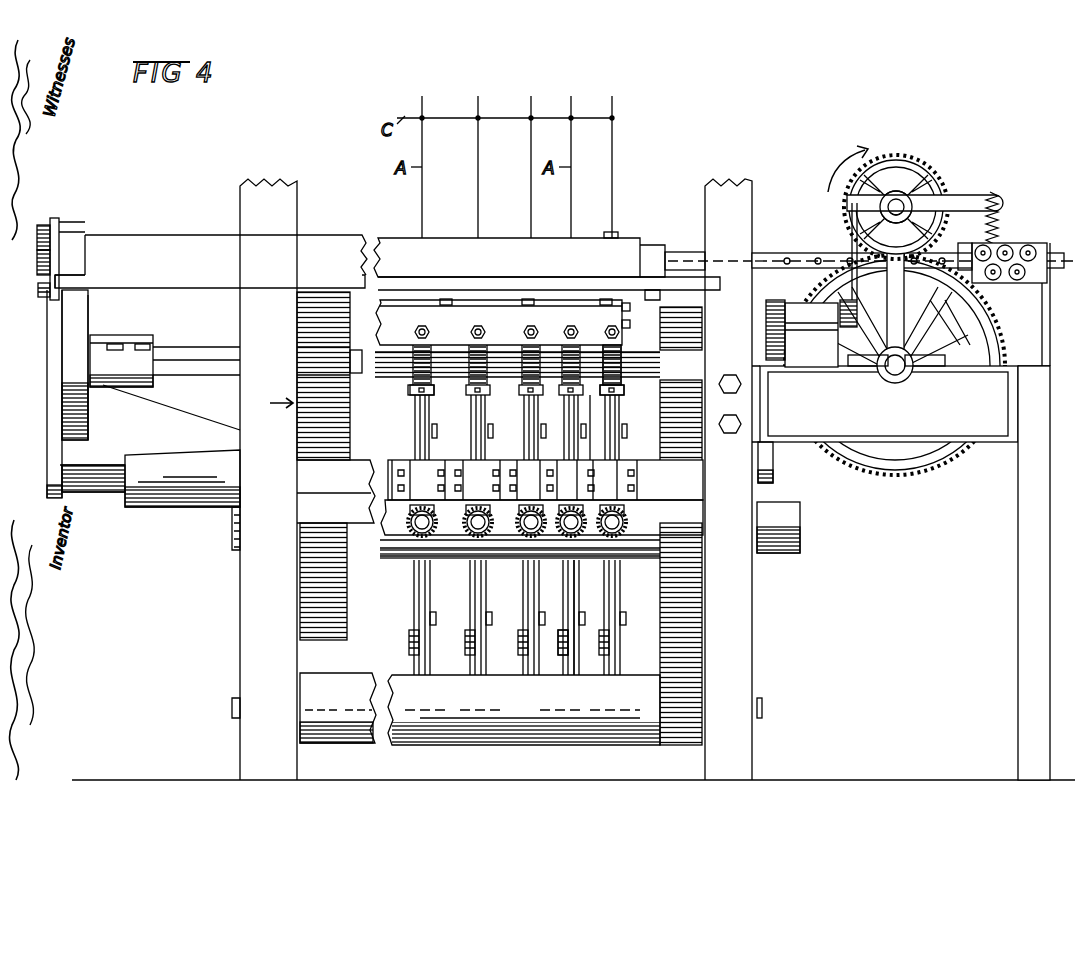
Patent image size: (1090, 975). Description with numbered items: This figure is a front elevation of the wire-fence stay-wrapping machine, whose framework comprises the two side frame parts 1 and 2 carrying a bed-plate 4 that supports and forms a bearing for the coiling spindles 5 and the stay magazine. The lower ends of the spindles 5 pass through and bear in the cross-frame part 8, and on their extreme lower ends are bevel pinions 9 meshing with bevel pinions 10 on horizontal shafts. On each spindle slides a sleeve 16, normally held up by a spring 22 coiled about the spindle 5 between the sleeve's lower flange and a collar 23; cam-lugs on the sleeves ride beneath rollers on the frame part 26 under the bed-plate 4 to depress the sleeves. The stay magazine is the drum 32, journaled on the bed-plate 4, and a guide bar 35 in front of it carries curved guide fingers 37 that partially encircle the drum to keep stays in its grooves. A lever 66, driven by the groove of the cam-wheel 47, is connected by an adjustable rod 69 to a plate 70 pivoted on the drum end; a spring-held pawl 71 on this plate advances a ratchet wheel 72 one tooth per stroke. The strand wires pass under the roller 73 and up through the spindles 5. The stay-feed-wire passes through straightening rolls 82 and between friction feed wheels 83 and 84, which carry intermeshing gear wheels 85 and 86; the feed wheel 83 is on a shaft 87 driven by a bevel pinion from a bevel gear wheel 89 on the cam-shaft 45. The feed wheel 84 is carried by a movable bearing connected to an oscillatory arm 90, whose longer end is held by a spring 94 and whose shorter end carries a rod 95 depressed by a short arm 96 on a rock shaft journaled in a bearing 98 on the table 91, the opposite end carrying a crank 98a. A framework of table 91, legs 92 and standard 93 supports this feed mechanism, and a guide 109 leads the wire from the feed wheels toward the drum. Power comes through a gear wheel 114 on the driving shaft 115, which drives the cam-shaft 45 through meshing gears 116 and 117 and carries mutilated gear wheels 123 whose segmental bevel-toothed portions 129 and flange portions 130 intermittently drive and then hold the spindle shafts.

The side frame part 1 is at (740, 197).
The side frame part 2 is at (264, 479).
The bed-plate 4 is at (270, 288).
The spindle 5 is at (612, 420).
The cross-frame part 8 is at (545, 480).
The bevel pinion 9 is at (614, 507).
The bevel pinion 10 is at (620, 543).
The sleeve 16 is at (582, 340).
The spring 22 is at (620, 358).
The collar 23 is at (616, 391).
The frame part 26 is at (437, 297).
The magazine drum 32 is at (311, 239).
The guide bar 35 is at (211, 261).
The curved guide finger 37 is at (612, 240).
The cam-shaft 45 is at (399, 373).
The cam-wheel 47 is at (88, 420).
The lever 66 is at (55, 455).
The rod 69 is at (44, 298).
The plate 70 is at (58, 229).
The pawl 71 is at (37, 237).
The ratchet wheel 72 is at (37, 258).
The roller 73 is at (510, 712).
The straightening rolls 82 is at (1020, 245).
The friction feed wheel 83 is at (934, 455).
The friction feed wheel 84 is at (913, 168).
The gear wheel 85 is at (1000, 329).
The gear wheel 86 is at (945, 173).
The shaft 87 is at (893, 373).
The bevel gear wheel 89 is at (946, 352).
The oscillatory arm 90 is at (868, 200).
The table 91 is at (889, 404).
The legs 92 is at (1028, 535).
The standard 93 is at (893, 292).
The spring 94 is at (1002, 210).
The rod 95 is at (853, 251).
The short arm 96 is at (852, 324).
The bearing 98 is at (811, 335).
The crank 98a is at (770, 341).
The guide 109 is at (691, 245).
The gear wheel 114 is at (700, 584).
The driving shaft 115 is at (408, 538).
The gear 116 is at (341, 420).
The gear 117 is at (312, 321).
The mutilated gear wheel 123 is at (585, 594).
The segmental bevel-toothed portion 129 is at (597, 444).
The flange portion 130 is at (582, 656).